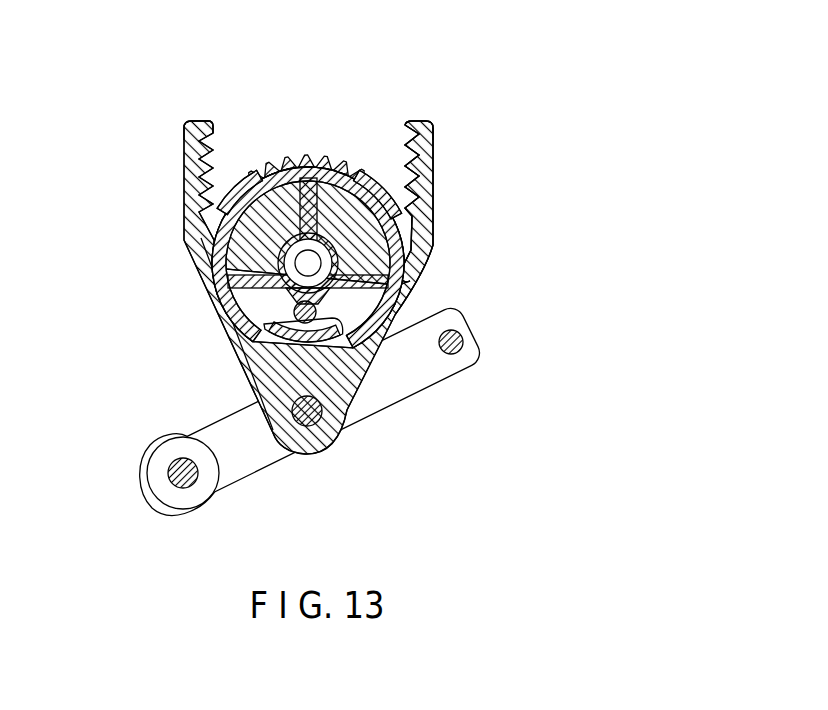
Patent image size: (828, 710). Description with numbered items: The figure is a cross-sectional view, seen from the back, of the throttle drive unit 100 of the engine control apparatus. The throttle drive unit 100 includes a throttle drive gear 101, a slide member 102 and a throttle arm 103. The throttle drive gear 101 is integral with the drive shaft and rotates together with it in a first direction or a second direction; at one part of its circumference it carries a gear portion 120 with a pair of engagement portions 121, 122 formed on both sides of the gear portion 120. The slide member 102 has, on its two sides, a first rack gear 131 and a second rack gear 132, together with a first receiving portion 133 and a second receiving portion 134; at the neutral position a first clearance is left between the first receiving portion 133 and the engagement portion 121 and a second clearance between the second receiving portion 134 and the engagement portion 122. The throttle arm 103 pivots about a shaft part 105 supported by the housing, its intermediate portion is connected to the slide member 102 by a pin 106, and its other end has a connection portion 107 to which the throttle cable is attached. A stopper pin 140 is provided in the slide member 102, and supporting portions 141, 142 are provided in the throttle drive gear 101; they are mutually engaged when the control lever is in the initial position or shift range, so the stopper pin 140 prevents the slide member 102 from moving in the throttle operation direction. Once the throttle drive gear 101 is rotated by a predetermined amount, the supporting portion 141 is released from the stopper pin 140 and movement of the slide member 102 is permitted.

The throttle drive unit 100 is at (146, 116).
The throttle drive gear 101 is at (372, 175).
The slide member 102 is at (423, 222).
The throttle arm 103 is at (383, 400).
The shaft part 105 is at (185, 490).
The pin 106 is at (305, 422).
The connection portion 107 is at (452, 356).
The gear portion 120 is at (299, 158).
The engagement portion 121 is at (216, 210).
The engagement portion 122 is at (410, 212).
The first rack gear 131 is at (210, 121).
The second rack gear 132 is at (404, 135).
The first receiving portion 133 is at (205, 265).
The second receiving portion 134 is at (407, 263).
The stopper pin 140 is at (277, 320).
The supporting portion 141 is at (262, 356).
The supporting portion 142 is at (294, 302).